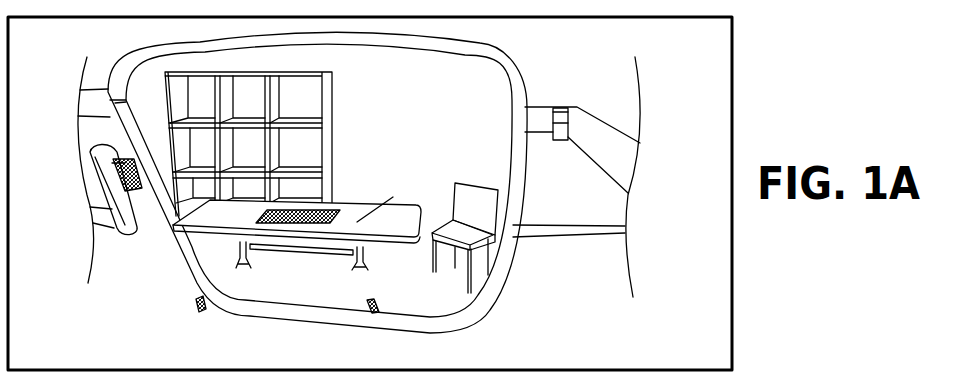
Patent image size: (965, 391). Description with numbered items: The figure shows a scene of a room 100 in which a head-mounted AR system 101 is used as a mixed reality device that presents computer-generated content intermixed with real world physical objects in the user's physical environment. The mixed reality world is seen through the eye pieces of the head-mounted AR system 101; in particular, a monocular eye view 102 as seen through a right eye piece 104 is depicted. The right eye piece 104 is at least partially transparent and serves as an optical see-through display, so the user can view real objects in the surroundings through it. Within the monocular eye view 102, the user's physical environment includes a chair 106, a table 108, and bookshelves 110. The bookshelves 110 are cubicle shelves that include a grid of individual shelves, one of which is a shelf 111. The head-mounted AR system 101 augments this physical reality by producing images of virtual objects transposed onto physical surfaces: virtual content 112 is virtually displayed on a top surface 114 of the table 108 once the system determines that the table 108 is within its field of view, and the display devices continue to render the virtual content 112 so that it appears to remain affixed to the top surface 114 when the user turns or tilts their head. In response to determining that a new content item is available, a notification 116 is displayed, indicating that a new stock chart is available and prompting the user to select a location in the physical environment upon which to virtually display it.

The room 100 is at (732, 98).
The head-mounted AR system 101 is at (597, 164).
The monocular eye view 102 is at (477, 91).
The right eye piece 104 is at (515, 82).
The chair 106 is at (478, 183).
The table 108 is at (310, 216).
The bookshelves 110 is at (281, 144).
The shelf 111 is at (241, 117).
The virtual content 112 is at (257, 220).
The top surface 114 is at (393, 197).
The notification 116 is at (430, 295).